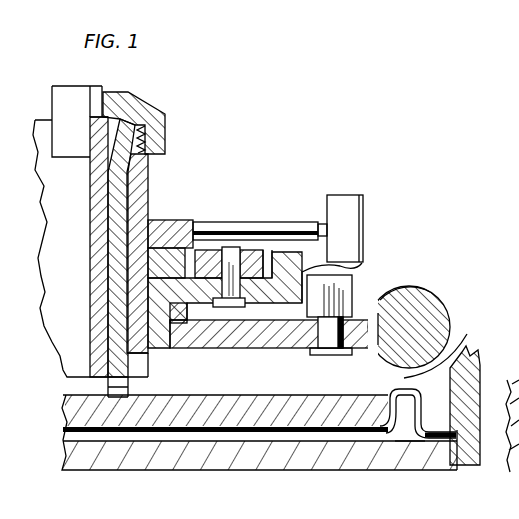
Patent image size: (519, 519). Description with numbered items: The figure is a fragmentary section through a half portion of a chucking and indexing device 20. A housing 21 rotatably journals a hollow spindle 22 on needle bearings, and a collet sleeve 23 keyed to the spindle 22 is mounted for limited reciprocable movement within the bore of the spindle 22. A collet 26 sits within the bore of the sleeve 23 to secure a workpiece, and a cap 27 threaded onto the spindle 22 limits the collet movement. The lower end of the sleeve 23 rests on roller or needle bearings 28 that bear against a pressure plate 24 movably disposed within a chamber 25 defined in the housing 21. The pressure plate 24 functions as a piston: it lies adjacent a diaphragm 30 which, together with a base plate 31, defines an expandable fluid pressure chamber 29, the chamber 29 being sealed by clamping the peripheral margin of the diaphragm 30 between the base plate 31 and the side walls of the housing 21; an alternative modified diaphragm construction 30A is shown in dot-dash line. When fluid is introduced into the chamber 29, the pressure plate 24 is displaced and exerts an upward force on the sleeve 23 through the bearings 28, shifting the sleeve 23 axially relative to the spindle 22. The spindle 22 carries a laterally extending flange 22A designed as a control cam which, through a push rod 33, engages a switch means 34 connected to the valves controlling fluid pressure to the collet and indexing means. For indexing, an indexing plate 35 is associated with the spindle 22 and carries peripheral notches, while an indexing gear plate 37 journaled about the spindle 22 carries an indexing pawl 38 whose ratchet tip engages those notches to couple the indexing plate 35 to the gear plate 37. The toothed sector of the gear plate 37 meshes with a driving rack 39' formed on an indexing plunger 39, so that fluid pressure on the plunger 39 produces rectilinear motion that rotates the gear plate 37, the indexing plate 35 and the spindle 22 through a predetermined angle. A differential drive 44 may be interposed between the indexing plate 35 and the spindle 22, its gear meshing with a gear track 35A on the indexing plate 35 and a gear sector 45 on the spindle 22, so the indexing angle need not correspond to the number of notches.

The chucking and indexing device 20 is at (238, 156).
The housing 21 is at (470, 366).
The hollow spindle 22 is at (142, 175).
The laterally extending flange 22A is at (160, 220).
The collet sleeve 23 is at (140, 146).
The pressure plate 24 is at (340, 393).
The chamber 25 is at (449, 345).
The collet 26 is at (98, 283).
The cap 27 is at (163, 112).
The bearings 28 is at (118, 392).
The expandable fluid pressure chamber 29 is at (397, 439).
The diaphragm 30 is at (317, 431).
The modified diaphragm construction 30A is at (427, 441).
The base plate 31 is at (357, 460).
The push rod 33 is at (252, 220).
The switch means 34 is at (365, 222).
The indexing plate 35 is at (362, 263).
The gear track 35A is at (264, 250).
The indexing gear plate 37 is at (290, 348).
The indexing pawl 38 is at (355, 288).
The indexing plunger 39 is at (426, 321).
The driving rack 39' is at (430, 272).
The differential drive 44 is at (223, 247).
The gear sector 45 is at (190, 262).